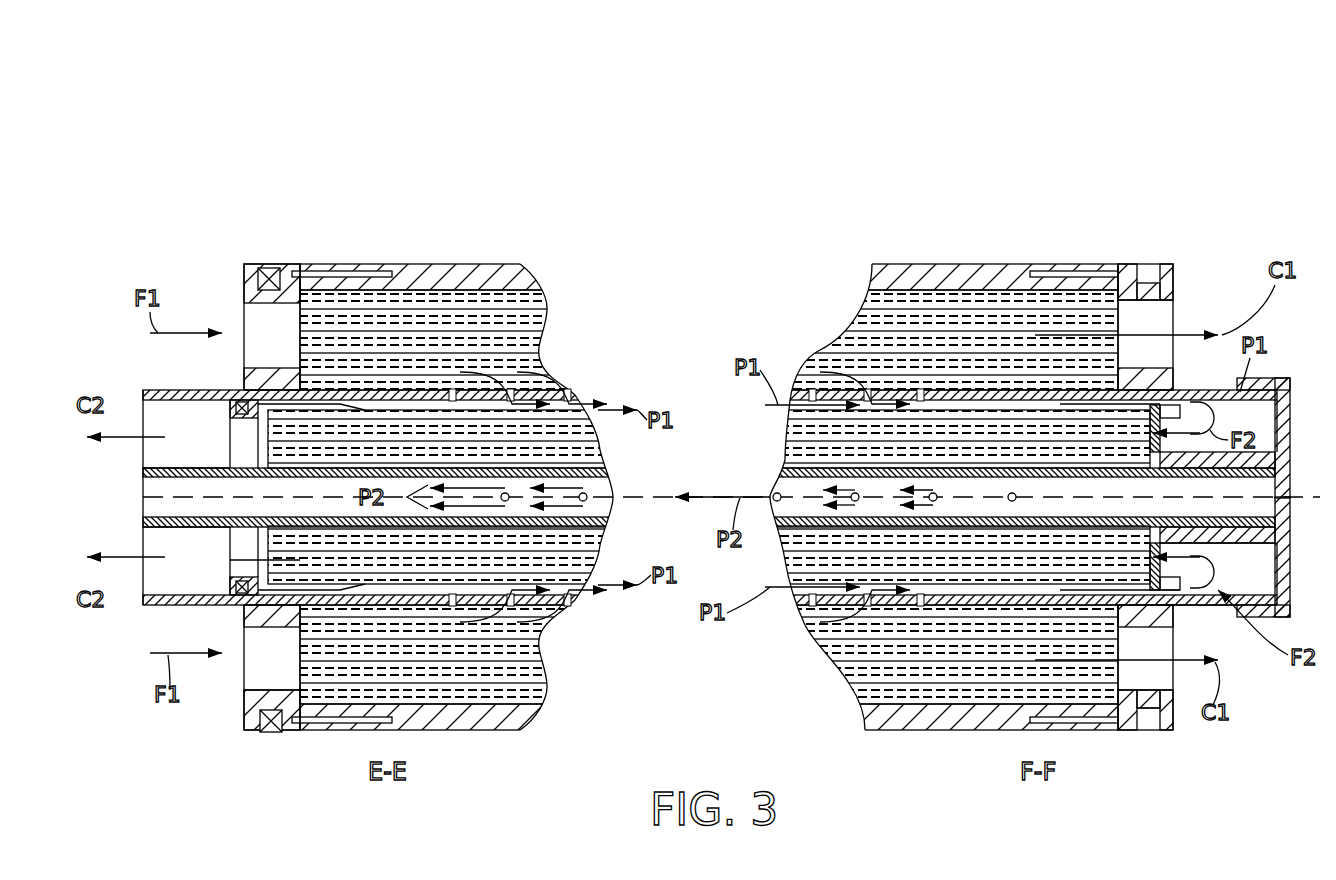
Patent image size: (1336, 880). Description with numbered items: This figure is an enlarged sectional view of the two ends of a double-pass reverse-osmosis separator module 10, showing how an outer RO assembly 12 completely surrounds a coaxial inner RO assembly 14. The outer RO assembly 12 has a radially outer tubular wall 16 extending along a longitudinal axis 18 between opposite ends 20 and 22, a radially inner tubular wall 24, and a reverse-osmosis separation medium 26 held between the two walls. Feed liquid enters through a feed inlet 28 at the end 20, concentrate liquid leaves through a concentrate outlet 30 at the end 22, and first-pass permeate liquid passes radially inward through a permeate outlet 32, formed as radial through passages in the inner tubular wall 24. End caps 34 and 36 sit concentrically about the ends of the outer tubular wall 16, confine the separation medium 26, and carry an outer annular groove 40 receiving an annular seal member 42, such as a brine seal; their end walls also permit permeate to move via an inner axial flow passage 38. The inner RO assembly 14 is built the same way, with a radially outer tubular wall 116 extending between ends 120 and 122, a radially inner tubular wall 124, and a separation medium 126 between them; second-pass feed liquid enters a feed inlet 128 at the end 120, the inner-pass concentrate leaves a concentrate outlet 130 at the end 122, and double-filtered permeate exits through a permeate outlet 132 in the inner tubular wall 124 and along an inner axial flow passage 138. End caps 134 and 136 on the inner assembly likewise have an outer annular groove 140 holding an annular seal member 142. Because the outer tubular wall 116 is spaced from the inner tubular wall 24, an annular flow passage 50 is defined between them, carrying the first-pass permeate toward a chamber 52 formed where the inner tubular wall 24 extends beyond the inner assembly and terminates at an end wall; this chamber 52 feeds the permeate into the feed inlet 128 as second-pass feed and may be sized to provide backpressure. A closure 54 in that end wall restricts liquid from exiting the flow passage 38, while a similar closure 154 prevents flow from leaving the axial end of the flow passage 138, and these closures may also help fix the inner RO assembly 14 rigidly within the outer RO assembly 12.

The double-pass reverse-osmosis separator module 10 is at (207, 152).
The outer RO assembly 12 is at (577, 302).
The inner RO assembly 14 is at (780, 548).
The radially outer tubular wall 16 is at (492, 268).
The longitudinal axis 18 is at (632, 497).
The axial end 20 is at (237, 248).
The axial end 22 is at (1178, 250).
The radially inner tubular wall 24 is at (165, 392).
The reverse-osmosis separation medium 26 is at (408, 312).
The feed inlet 28 is at (285, 330).
The concentrate outlet 30 is at (1185, 312).
The permeate outlet 32 is at (453, 400).
The end cap 34 is at (245, 725).
The end cap 36 is at (1170, 722).
The inner axial flow passage 38 is at (160, 412).
The outer annular groove 40 is at (1140, 735).
The annular seal member 42 is at (270, 735).
The annular flow passage 50 is at (590, 405).
The chamber 52 is at (1290, 410).
The closure 54 is at (1290, 592).
The radially outer tubular wall 116 is at (890, 410).
The axial end 120 is at (1225, 592).
The axial end 122 is at (205, 575).
The radially inner tubular wall 124 is at (150, 542).
The reverse-osmosis separation medium 126 is at (790, 428).
The feed inlet 128 is at (1205, 548).
The concentrate outlet 130 is at (240, 552).
The permeate outlet 132 is at (1040, 490).
The end cap 134 is at (1180, 408).
The end cap 136 is at (232, 402).
The inner axial flow passage 138 is at (148, 480).
The outer annular groove 140 is at (1172, 592).
The annular seal member 142 is at (232, 620).
The closure 154 is at (1282, 548).